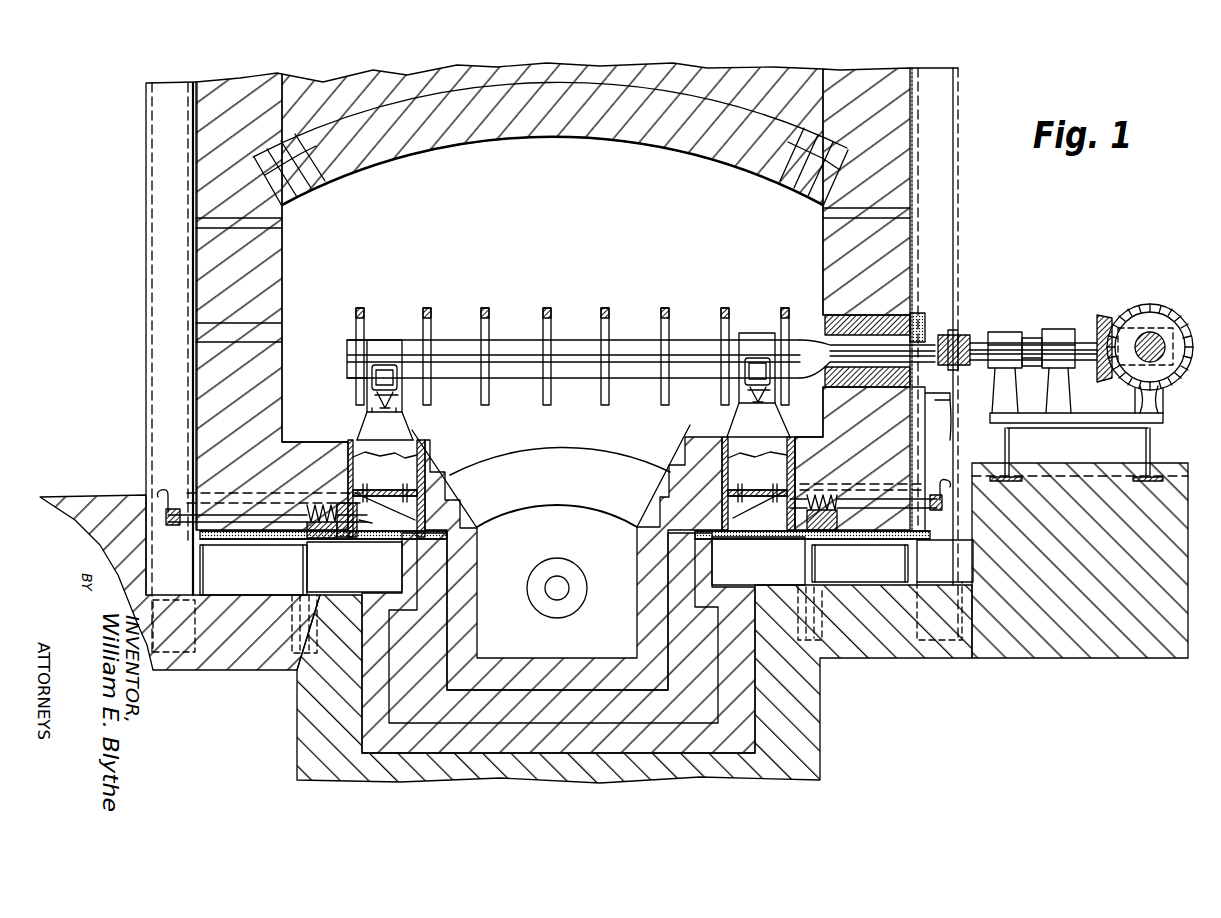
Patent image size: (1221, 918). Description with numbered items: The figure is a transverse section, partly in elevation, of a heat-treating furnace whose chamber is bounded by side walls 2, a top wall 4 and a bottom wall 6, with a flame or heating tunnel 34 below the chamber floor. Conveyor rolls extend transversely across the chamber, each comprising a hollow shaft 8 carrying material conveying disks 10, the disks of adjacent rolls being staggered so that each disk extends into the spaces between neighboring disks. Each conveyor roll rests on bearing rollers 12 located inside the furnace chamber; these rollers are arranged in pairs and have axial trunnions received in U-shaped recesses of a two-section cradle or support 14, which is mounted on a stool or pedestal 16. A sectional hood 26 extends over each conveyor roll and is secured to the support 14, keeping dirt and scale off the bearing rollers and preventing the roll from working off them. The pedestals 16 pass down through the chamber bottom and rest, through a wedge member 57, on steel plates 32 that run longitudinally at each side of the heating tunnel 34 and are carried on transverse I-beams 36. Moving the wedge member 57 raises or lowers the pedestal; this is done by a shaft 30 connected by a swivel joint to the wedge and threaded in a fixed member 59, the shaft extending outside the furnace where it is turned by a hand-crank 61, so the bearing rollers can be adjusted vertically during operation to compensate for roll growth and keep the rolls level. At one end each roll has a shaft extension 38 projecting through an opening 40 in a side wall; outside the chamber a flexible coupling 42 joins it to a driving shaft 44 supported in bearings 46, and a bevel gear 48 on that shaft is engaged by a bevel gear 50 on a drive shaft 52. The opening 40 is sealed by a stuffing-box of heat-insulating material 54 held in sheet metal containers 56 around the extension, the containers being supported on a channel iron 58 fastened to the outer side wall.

The side walls 2 is at (282, 260).
The top wall 4 is at (543, 138).
The bottom wall 6 is at (425, 440).
The hollow shaft 8 is at (522, 340).
The material conveying disks 10 is at (664, 310).
The bearing rollers 12 is at (372, 380).
The cradle or support 14 is at (400, 400).
The stool or pedestal 16 is at (365, 432).
The hood 26 is at (396, 340).
The rod 30 is at (430, 480).
The steel plates 32 is at (263, 545).
The flame or heating tunnel 34 is at (567, 658).
The I-beams 36 is at (215, 557).
The shaft extension 38 is at (842, 345).
The opening 40 is at (918, 315).
The flexible coupling 42 is at (1005, 332).
The driving shaft 44 is at (1032, 338).
The bearings 46 is at (1060, 329).
The bevel gears 48 is at (1104, 315).
The bevel gears 50 is at (1148, 304).
The drive shafts 52 is at (1158, 335).
The heat-insulating material 54 is at (925, 397).
The sheet metal containers 56 is at (958, 330).
The wedge member 57 is at (378, 537).
The channel iron 58 is at (952, 400).
The fixed member 59 is at (333, 538).
The hand-crank 61 is at (166, 488).